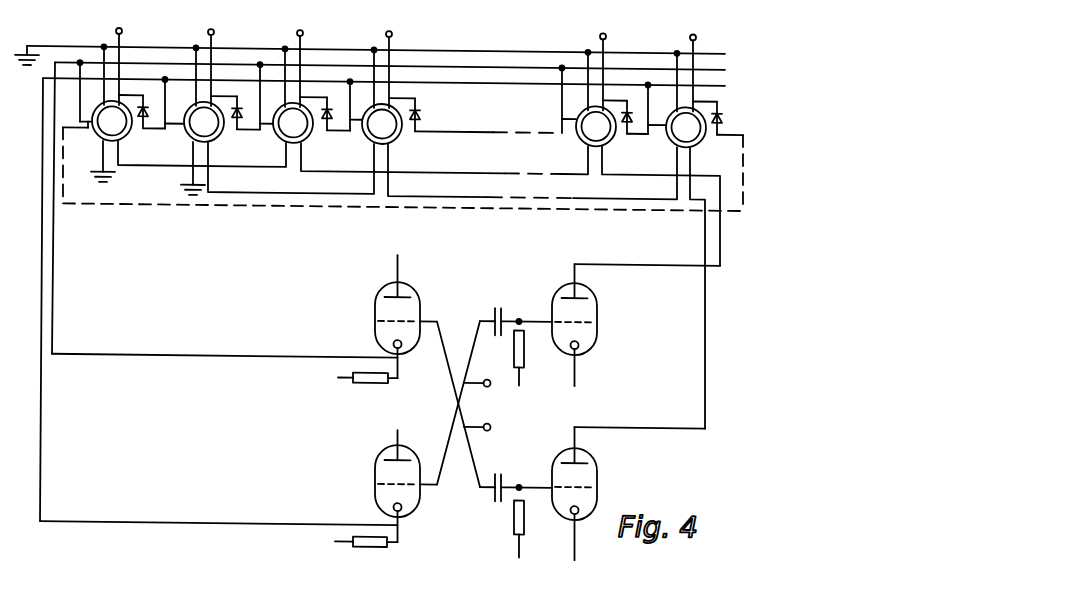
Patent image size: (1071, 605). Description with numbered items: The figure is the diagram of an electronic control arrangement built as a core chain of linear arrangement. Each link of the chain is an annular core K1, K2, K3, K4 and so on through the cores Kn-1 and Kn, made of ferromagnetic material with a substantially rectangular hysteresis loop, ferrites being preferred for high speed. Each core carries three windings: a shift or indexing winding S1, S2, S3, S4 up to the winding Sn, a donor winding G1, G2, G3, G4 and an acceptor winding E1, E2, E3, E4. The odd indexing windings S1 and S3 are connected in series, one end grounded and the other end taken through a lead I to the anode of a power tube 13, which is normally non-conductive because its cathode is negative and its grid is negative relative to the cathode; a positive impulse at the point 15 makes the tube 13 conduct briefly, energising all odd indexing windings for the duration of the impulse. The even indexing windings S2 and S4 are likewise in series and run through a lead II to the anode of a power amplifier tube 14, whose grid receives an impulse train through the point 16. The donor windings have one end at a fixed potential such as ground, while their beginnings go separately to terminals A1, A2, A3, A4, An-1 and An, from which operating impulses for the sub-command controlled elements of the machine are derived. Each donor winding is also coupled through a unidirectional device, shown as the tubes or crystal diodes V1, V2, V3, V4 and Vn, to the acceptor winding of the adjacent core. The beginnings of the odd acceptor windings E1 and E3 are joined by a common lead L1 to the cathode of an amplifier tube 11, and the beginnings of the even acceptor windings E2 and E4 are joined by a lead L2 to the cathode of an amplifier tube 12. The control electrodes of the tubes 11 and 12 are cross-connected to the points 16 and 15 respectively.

The amplifier tube 11 is at (375, 304).
The amplifier tube 12 is at (375, 470).
The power tube 13 is at (597, 301).
The power amplifier tube 14 is at (597, 467).
The point 15 is at (490, 384).
The point 16 is at (490, 428).
The common lead L1 is at (225, 209).
The lead L2 is at (219, 303).
The lead I is at (650, 256).
The lead II is at (659, 418).
The terminal A1 is at (119, 55).
The terminal A2 is at (208, 55).
The terminal A3 is at (301, 56).
The terminal A4 is at (391, 57).
The terminal An-1 is at (610, 62).
The terminal An is at (696, 63).
The donor winding G1 is at (96, 77).
The donor winding G2 is at (188, 78).
The donor winding G3 is at (277, 78).
The donor winding G4 is at (367, 78).
The acceptor winding E1 is at (77, 97).
The acceptor winding E2 is at (167, 107).
The acceptor winding E3 is at (257, 99).
The acceptor winding E4 is at (348, 108).
The unidirectional device V1 is at (143, 105).
The unidirectional device V2 is at (235, 106).
The unidirectional device V3 is at (326, 106).
The unidirectional device V4 is at (475, 108).
The unidirectional device Vn is at (719, 110).
The annular core K1 is at (122, 130).
The annular core K2 is at (213, 130).
The annular core K3 is at (302, 131).
The annular core K4 is at (392, 132).
The annular core Kn-1 is at (612, 135).
The annular core Kn is at (695, 136).
The shift winding S1 is at (188, 162).
The shift winding S2 is at (277, 169).
The shift winding S3 is at (437, 160).
The shift winding S4 is at (526, 171).
The shift winding Sn is at (691, 287).